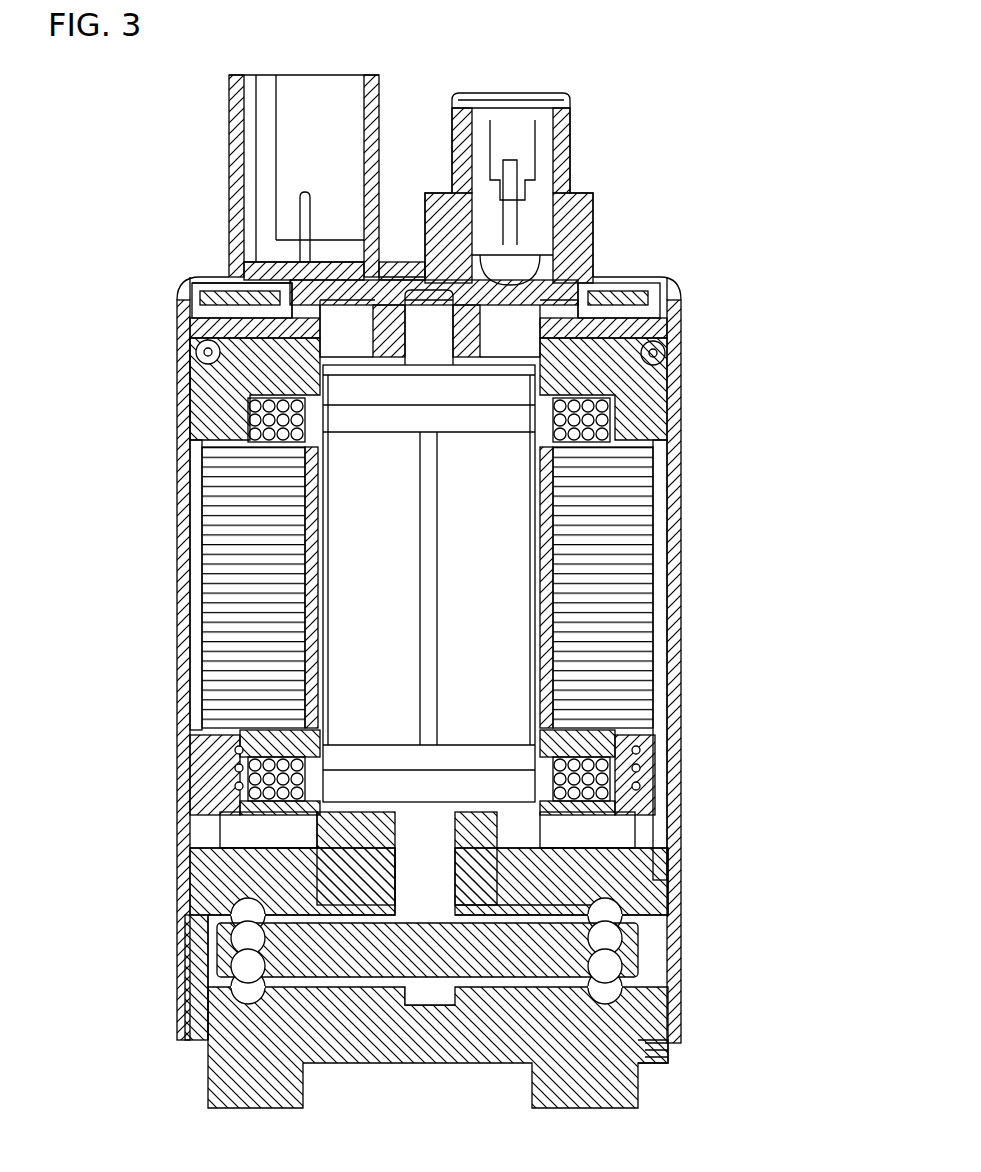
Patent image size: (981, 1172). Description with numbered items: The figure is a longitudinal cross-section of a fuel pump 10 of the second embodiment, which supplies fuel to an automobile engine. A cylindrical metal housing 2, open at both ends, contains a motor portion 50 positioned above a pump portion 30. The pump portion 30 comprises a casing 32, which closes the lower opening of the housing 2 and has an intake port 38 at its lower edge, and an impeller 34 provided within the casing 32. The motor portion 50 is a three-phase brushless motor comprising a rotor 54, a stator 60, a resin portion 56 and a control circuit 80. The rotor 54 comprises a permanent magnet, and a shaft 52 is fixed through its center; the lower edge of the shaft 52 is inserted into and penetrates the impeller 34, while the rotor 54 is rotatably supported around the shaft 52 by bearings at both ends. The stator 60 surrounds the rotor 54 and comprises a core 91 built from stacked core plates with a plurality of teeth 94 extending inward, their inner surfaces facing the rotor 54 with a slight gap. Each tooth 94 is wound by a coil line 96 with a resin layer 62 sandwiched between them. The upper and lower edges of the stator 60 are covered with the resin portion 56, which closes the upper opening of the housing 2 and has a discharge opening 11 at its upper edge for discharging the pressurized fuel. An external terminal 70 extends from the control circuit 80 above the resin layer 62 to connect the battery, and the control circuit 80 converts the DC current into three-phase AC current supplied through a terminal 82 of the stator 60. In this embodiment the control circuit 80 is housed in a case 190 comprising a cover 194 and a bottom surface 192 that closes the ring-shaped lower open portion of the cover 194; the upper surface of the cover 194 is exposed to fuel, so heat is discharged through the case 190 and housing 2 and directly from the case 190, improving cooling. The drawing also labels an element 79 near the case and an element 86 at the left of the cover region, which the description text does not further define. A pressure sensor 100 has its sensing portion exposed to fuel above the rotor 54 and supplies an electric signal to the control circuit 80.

The fuel pump 10 is at (650, 42).
The housing 2 is at (676, 516).
The discharge opening 11 is at (540, 130).
The pump portion 30 is at (690, 905).
The casing 32 is at (655, 1015).
The impeller 34 is at (600, 950).
The intake port 38 is at (605, 1075).
The motor portion 50 is at (692, 338).
The shaft 52 is at (372, 318).
The rotor 54 is at (215, 400).
The resin portion 56 is at (565, 300).
The stator 60 is at (664, 606).
The resin layer 62 is at (225, 420).
The external terminal 70 is at (298, 205).
The plate 79 is at (672, 294).
The control circuit 80 is at (615, 284).
The terminal 82 is at (200, 335).
The cover wall 86 is at (192, 365).
The core 91 is at (215, 652).
The teeth 94 is at (235, 466).
The coil line 96 is at (255, 410).
The pressure sensor 100 is at (410, 320).
The case 190 is at (204, 272).
The bottom surface 192 is at (245, 312).
The cover 194 is at (192, 284).